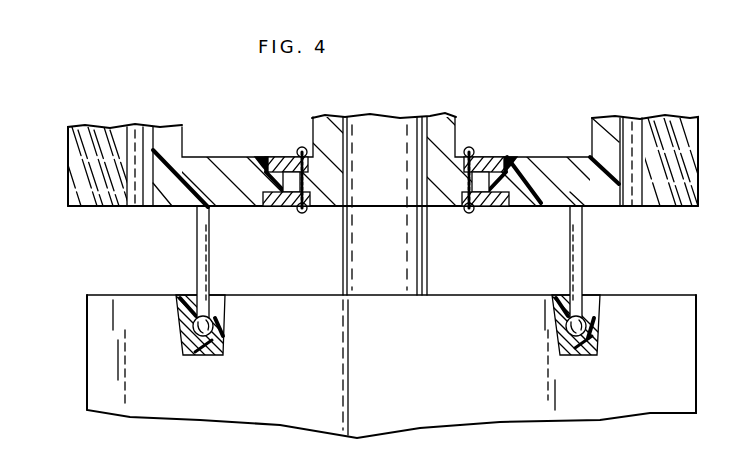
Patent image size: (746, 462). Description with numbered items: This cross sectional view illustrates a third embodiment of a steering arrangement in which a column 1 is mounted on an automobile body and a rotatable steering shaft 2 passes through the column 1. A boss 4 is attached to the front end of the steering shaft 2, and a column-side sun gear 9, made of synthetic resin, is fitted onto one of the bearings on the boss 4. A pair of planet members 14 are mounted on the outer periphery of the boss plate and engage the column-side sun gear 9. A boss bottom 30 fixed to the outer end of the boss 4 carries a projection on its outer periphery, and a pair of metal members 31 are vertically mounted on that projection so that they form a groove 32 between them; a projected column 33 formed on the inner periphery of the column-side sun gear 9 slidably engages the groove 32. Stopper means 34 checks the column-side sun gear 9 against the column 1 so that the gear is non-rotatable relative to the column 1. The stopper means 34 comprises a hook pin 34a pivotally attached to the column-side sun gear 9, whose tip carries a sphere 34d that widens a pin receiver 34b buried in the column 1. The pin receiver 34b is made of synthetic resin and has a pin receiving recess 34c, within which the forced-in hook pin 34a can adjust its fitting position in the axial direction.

The column 1 is at (98, 365).
The steering shaft 2 is at (427, 265).
The boss 4 is at (440, 119).
The column-side sun gear 9 is at (164, 127).
The planet members 14 is at (67, 152).
The boss bottom 30 is at (340, 209).
The metal members 31 is at (298, 156).
The groove 32 is at (266, 212).
The projected column 33 is at (268, 180).
The stopper means 34 is at (387, 283).
The hook pin 34a is at (210, 266).
The pin receiver 34b is at (213, 313).
The pin receiving recess 34c is at (185, 312).
The sphere 34d is at (216, 333).